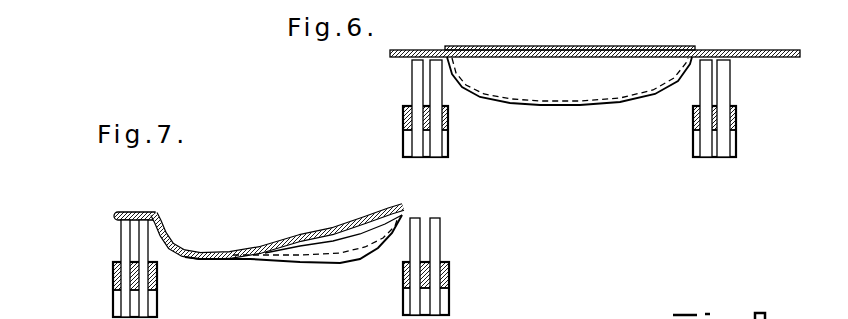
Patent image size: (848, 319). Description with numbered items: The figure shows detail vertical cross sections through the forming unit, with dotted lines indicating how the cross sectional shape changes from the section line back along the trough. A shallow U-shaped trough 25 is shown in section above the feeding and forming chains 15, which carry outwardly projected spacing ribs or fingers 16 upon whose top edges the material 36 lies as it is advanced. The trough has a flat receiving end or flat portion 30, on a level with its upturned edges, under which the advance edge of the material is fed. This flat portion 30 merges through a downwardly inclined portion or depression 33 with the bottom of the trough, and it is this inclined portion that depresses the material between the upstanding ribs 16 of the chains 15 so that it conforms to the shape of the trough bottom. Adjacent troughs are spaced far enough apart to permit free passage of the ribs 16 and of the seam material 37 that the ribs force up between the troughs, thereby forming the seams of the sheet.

In FIG. 6, the feeding and forming chains 15 is at (407, 137).
In FIG. 7, the feeding and forming chains 15 is at (158, 285).
In FIG. 6, the spacing ribs or fingers 16 is at (428, 88).
In FIG. 7, the spacing ribs or fingers 16 is at (138, 248).
In FIG. 6, the shallow U-shaped trough 25 is at (575, 105).
In FIG. 7, the shallow U-shaped trough 25 is at (289, 263).
In FIG. 6, the flat portion 30 is at (638, 46).
In FIG. 6, the downwardly inclined portion or depression 33 is at (513, 83).
In FIG. 7, the downwardly inclined portion or depression 33 is at (333, 236).
In FIG. 7, the material 36 is at (158, 250).
In FIG. 7, the seam material 37 is at (140, 202).